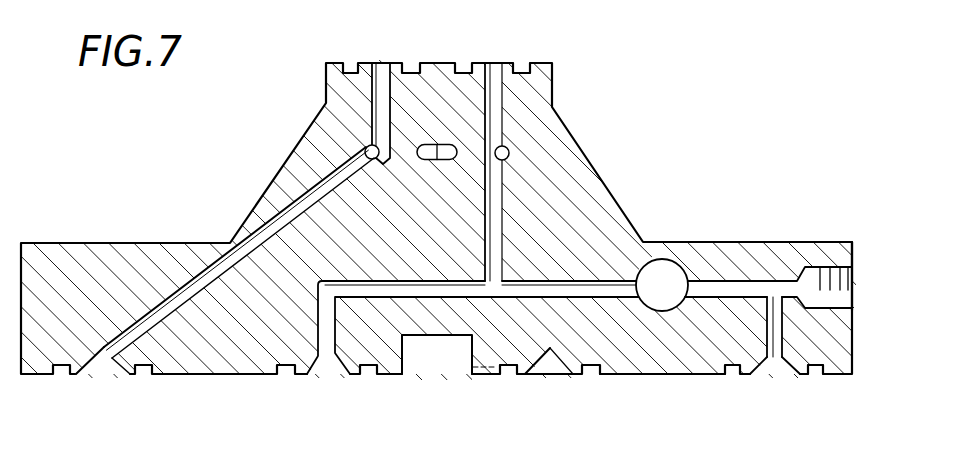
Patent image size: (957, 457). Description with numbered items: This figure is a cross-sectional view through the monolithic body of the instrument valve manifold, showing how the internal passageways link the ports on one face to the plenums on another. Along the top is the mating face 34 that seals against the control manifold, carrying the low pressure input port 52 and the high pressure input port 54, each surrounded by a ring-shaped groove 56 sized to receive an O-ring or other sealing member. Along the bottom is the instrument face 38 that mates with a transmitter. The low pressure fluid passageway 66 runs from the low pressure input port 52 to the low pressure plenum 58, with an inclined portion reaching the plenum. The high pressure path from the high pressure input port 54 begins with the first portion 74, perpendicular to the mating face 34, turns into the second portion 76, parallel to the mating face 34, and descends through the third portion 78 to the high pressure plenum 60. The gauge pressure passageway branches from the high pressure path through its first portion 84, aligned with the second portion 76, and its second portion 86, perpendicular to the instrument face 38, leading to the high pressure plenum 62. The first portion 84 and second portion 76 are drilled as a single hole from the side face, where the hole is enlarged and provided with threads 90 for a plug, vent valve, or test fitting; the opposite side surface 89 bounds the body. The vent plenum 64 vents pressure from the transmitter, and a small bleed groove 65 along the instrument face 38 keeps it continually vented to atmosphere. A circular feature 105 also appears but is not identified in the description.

The mating face 34 is at (443, 63).
The instrument face 38 is at (632, 376).
The low pressure input port 52 is at (382, 75).
The high pressure input port 54 is at (495, 75).
The ring-shaped groove 56 is at (527, 63).
The low pressure plenum 58 is at (95, 365).
The high pressure plenum 60 is at (323, 325).
The high pressure plenum 62 is at (775, 370).
The vent plenum 64 is at (550, 363).
The bleed groove 65 is at (476, 377).
The low pressure fluid passageway 66 is at (383, 95).
The first portion 74 is at (495, 200).
The second portion 76 is at (435, 290).
The third portion 78 is at (263, 372).
The first portion 84 is at (580, 285).
The second portion 86 is at (767, 320).
The side surface 89 is at (853, 250).
The threads 90 is at (823, 308).
The chamber 105 is at (670, 275).